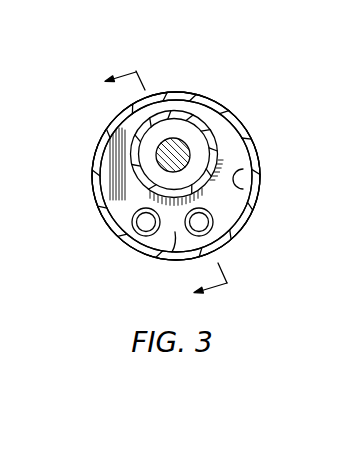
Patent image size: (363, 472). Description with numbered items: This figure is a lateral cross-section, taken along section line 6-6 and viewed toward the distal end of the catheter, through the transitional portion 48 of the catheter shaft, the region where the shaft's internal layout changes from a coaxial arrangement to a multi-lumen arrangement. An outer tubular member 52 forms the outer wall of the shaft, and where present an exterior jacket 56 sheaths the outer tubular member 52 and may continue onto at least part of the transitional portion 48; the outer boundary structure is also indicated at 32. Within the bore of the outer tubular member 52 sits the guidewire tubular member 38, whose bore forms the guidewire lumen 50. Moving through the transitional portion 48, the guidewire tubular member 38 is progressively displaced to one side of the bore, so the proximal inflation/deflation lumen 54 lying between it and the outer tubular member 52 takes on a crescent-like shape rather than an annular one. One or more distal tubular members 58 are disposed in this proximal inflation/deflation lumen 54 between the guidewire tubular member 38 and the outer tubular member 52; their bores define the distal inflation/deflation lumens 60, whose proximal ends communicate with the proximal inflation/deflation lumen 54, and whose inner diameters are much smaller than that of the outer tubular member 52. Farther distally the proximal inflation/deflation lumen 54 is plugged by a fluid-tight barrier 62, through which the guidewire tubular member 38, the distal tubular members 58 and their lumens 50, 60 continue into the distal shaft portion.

The section line 6- 6 is at (171, 179).
The outer tubular member 32 is at (223, 127).
The guidewire tubular member 38 is at (125, 141).
The transitional portion 48 is at (214, 84).
The guidewire lumen 50 is at (169, 128).
The outer tubular member 52 is at (256, 178).
The proximal inflation/deflation lumen 54 is at (217, 200).
The exterior jacket 56 is at (92, 198).
The distal tubular members 58 is at (130, 219).
The distal inflation/deflation lumens 60 is at (174, 234).
The fluid-tight barrier 62 is at (119, 178).